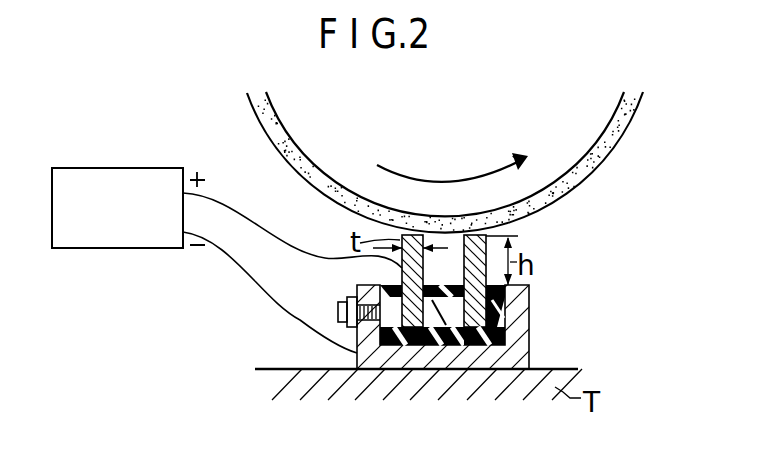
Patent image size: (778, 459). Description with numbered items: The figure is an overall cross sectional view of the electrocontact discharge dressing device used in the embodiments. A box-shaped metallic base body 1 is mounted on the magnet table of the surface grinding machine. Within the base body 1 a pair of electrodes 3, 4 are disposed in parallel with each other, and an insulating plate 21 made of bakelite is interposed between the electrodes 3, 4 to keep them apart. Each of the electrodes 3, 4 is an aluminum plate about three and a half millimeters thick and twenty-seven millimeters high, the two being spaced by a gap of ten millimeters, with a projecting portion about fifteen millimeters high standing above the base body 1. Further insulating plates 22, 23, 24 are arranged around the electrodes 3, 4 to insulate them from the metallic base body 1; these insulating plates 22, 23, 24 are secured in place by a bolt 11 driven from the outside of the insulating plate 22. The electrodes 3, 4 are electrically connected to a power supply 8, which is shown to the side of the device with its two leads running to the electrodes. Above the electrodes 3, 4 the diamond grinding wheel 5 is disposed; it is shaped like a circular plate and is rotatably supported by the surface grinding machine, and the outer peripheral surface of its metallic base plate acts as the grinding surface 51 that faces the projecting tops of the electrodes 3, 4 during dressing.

The base body 1 is at (513, 345).
The electrode 3 is at (402, 270).
The electrode 4 is at (464, 262).
The diamond grinding wheel 5 is at (640, 135).
The grinding surface 51 is at (567, 190).
The power supply 8 is at (128, 248).
The bolt 11 is at (338, 313).
The insulating plate 21 is at (447, 343).
The insulating plate 22 is at (388, 347).
The insulating plate 23 is at (480, 343).
The insulating plate 24 is at (503, 297).